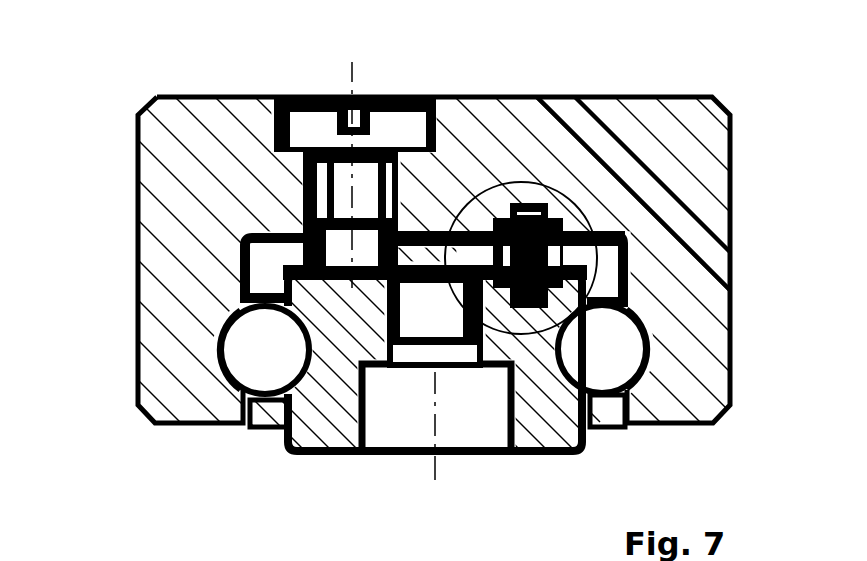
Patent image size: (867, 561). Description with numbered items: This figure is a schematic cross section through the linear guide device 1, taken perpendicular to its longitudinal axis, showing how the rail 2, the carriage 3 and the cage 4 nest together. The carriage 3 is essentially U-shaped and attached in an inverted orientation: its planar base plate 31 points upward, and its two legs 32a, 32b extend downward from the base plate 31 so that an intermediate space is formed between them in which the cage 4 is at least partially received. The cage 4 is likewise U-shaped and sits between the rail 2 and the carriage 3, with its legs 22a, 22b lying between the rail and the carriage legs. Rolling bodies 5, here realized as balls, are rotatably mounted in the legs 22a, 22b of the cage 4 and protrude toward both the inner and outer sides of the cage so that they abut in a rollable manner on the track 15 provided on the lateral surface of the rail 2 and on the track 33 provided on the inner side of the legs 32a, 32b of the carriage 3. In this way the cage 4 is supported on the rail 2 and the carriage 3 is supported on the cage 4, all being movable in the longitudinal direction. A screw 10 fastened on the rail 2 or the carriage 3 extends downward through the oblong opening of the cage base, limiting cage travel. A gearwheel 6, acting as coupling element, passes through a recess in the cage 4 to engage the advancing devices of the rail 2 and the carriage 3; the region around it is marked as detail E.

The linear guide device 1 is at (116, 145).
The rail 2 is at (312, 422).
The carriage 3 is at (502, 125).
The cage 4 is at (268, 262).
The rolling bodies 5 is at (255, 360).
The gearwheel 6 is at (548, 205).
The screw 10 is at (315, 133).
The track 15 is at (345, 398).
The leg of the cage 22a is at (628, 278).
The leg of the cage 22b is at (243, 259).
The base plate 31 is at (548, 130).
The leg of the carriage 32a is at (692, 336).
The leg of the carriage 32b is at (180, 367).
The track 33 is at (211, 342).
The detail region E is at (521, 246).